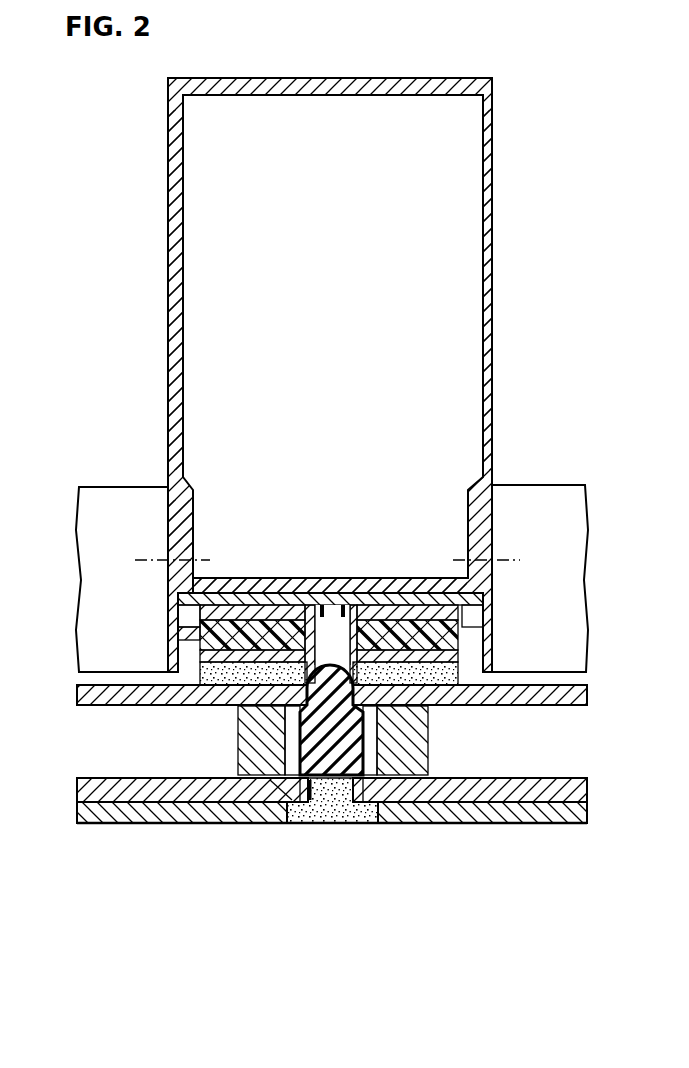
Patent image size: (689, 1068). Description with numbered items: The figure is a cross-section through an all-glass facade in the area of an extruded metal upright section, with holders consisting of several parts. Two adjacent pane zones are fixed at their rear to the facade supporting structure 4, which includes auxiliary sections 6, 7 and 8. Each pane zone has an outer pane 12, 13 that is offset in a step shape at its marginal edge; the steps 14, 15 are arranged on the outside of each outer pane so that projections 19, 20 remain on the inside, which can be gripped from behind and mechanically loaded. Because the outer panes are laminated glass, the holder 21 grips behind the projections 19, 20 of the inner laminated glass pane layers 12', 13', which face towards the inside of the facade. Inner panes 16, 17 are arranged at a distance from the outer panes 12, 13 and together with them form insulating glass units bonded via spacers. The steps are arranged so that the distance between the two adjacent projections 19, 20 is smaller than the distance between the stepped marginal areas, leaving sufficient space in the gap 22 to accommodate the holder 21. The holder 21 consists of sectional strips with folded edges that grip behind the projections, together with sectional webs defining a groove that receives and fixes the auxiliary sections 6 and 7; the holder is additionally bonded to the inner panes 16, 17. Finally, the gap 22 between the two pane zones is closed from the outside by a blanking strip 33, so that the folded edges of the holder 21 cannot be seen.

The facade supporting structure 4 is at (494, 338).
The auxiliary section 6 is at (174, 543).
The auxiliary section 7 is at (490, 588).
The auxiliary section 8 is at (405, 600).
The outer pane 12 is at (482, 837).
The inner laminated glass pane layer 12' is at (497, 792).
The outer pane 13 is at (182, 837).
The inner laminated glass pane layer 13' is at (170, 795).
The step 14 is at (368, 815).
The step 15 is at (296, 818).
The inner pane 16 is at (533, 700).
The inner pane 17 is at (126, 692).
The projection 19 is at (395, 792).
The projection 20 is at (290, 782).
The holder 21 is at (328, 612).
The gap 22 is at (333, 795).
The blanking strip 33 is at (370, 745).